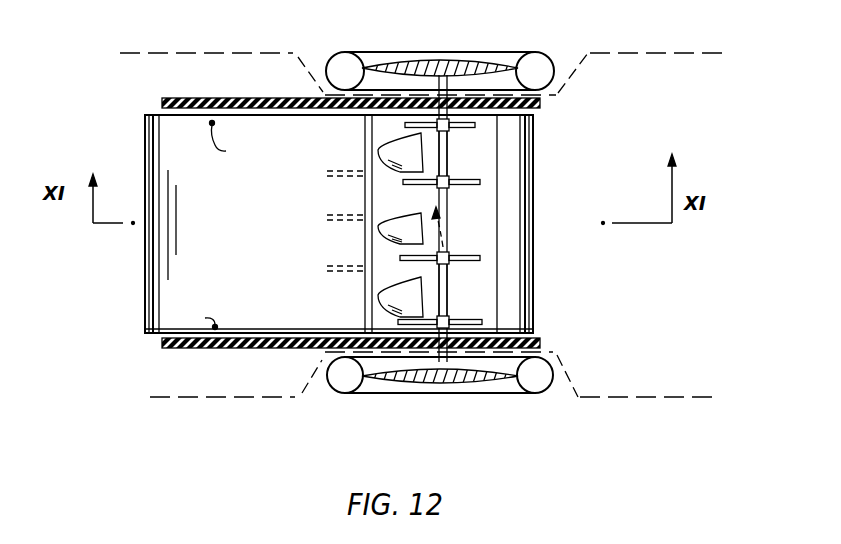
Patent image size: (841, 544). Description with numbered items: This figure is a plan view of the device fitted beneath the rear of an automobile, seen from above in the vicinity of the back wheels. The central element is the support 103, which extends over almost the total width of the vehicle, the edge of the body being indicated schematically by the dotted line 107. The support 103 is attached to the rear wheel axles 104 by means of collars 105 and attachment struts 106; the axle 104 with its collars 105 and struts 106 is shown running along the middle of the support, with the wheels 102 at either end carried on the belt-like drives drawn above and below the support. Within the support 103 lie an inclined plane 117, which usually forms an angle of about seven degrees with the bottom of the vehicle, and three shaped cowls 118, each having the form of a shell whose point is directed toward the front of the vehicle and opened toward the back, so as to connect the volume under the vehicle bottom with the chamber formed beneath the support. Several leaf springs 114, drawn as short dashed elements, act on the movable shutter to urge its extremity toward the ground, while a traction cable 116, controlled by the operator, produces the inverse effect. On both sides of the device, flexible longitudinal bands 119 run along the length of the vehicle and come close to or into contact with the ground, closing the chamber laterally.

The wheel and belt drive 102 is at (562, 407).
The support 103 is at (450, 238).
The rear wheel axles 104 is at (447, 148).
The collars 105 is at (554, 321).
The attachment struts 106 is at (331, 293).
The edge of the body 107 is at (425, 207).
The leaf springs 114 is at (348, 170).
The traction cable 116 is at (215, 225).
The inclined plane 117 is at (468, 222).
The shaped cowls 118 is at (396, 135).
The longitudinal bands 119 is at (275, 97).